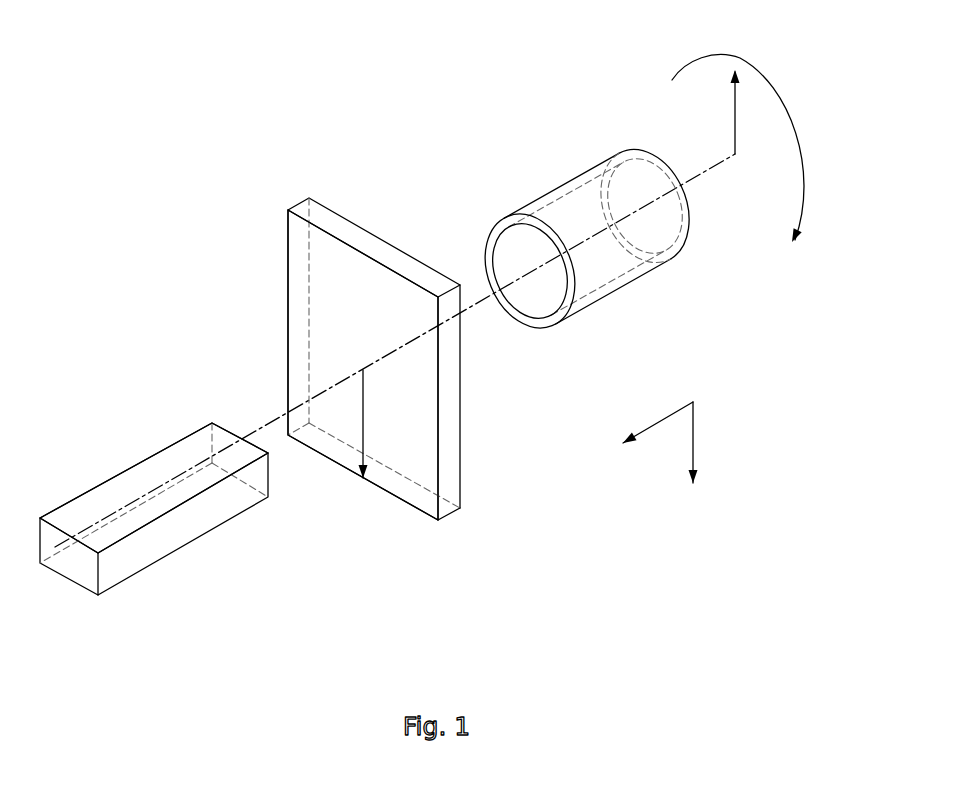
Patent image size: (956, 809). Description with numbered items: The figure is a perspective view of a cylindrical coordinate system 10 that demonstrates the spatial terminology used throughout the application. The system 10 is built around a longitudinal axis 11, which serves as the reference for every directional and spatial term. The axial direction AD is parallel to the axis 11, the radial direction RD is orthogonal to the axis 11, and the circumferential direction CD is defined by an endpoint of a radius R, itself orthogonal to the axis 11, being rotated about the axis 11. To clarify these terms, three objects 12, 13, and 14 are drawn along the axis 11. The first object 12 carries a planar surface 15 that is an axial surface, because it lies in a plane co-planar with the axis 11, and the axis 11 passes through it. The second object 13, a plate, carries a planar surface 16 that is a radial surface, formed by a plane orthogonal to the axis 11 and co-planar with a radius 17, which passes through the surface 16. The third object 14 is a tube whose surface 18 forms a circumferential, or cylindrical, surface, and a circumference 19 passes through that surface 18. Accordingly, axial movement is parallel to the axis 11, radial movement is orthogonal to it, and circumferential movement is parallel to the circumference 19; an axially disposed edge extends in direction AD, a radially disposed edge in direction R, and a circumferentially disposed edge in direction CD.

The cylindrical coordinate system 10 is at (247, 243).
The longitudinal axis 11 is at (676, 187).
The object 12 is at (154, 536).
The object 13 is at (371, 379).
The object 14 is at (546, 248).
The axial surface 15 is at (118, 492).
The radial surface 16 is at (303, 320).
The radius 17 is at (363, 413).
The circumferential surface 18 is at (556, 188).
The circumference 19 is at (485, 245).
The radius R is at (737, 108).
The circumferential direction CD is at (772, 98).
The axial direction AD is at (658, 422).
The radial direction RD is at (694, 438).